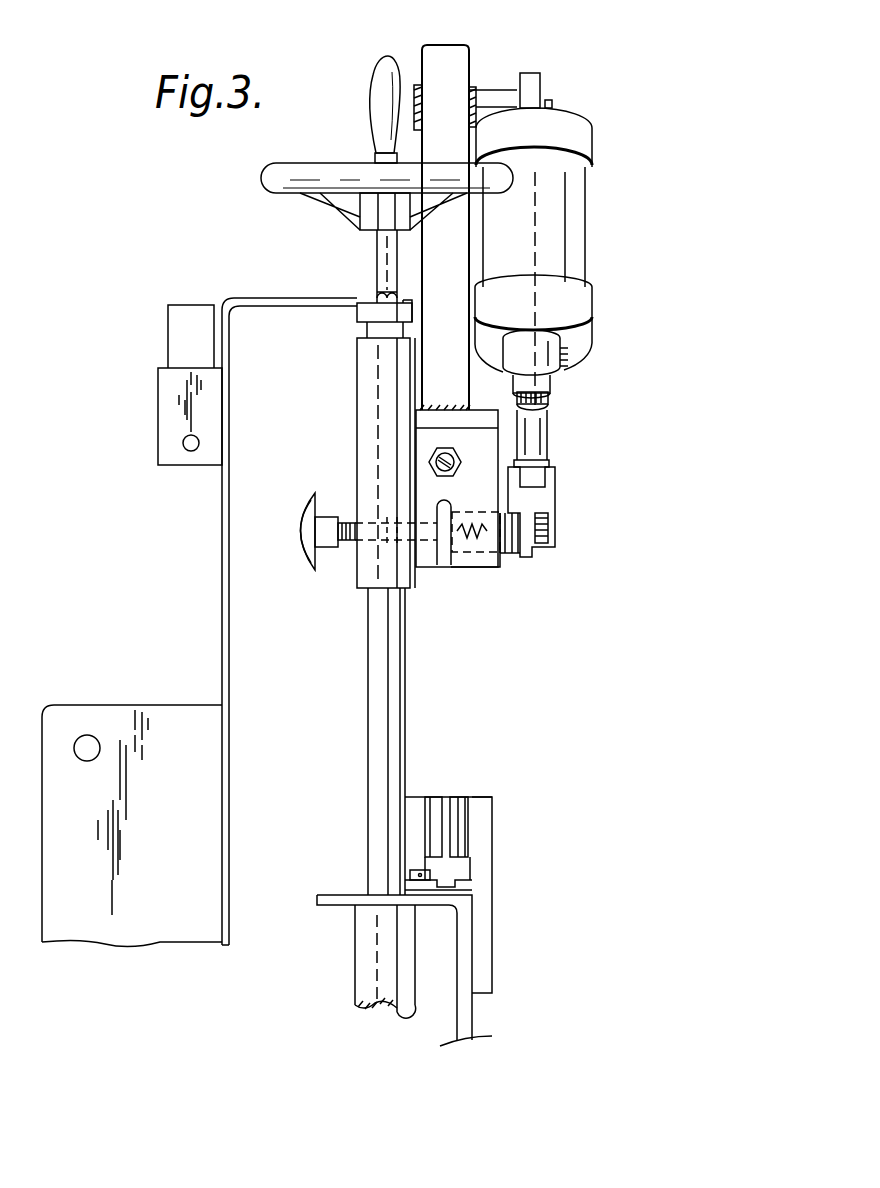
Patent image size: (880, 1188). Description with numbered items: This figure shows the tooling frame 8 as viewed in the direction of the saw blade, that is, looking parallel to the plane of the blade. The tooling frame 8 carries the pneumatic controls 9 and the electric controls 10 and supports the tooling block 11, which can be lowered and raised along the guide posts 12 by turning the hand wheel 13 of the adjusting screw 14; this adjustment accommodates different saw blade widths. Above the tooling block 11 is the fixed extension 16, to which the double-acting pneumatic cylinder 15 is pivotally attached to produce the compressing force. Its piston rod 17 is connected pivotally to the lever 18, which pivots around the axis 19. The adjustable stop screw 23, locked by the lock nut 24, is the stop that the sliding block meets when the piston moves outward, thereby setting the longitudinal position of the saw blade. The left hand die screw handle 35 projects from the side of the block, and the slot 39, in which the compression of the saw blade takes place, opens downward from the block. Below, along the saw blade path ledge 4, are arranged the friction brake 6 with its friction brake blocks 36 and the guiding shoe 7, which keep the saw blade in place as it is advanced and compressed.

The saw blade path ledge 4 is at (462, 953).
The friction brake 6 is at (483, 877).
The guiding shoe 7 is at (460, 883).
The tooling frame 8 is at (222, 507).
The pneumatic controls 9 is at (160, 415).
The electric controls 10 is at (93, 717).
The tooling block 11 is at (482, 452).
The guide posts 12 is at (373, 665).
The hand wheel 13 is at (267, 173).
The adjusting screw 14 is at (380, 253).
The double-acting pneumatic cylinder 15 is at (563, 248).
The fixed extension 16 is at (455, 80).
The piston rod 17 is at (547, 388).
The lever 18 is at (547, 490).
The axis 19 is at (540, 530).
The adjustable stop screw 23 is at (437, 457).
The lock nut 24 is at (433, 470).
The left hand die screw handle 35 is at (303, 547).
The friction brake blocks 36 is at (453, 803).
The slot 39 is at (443, 563).